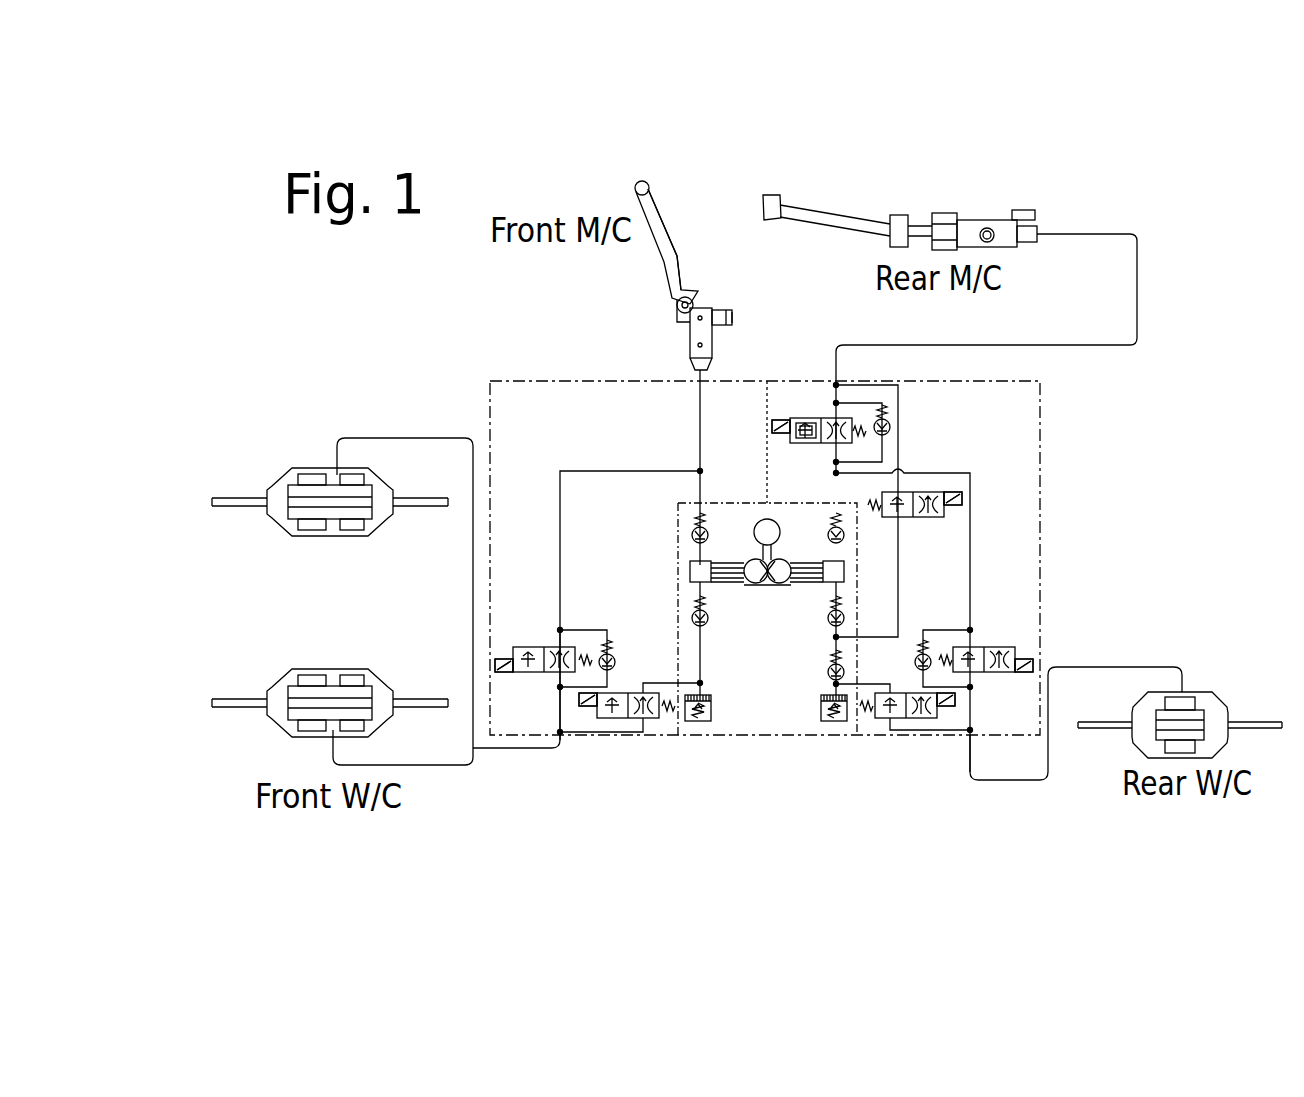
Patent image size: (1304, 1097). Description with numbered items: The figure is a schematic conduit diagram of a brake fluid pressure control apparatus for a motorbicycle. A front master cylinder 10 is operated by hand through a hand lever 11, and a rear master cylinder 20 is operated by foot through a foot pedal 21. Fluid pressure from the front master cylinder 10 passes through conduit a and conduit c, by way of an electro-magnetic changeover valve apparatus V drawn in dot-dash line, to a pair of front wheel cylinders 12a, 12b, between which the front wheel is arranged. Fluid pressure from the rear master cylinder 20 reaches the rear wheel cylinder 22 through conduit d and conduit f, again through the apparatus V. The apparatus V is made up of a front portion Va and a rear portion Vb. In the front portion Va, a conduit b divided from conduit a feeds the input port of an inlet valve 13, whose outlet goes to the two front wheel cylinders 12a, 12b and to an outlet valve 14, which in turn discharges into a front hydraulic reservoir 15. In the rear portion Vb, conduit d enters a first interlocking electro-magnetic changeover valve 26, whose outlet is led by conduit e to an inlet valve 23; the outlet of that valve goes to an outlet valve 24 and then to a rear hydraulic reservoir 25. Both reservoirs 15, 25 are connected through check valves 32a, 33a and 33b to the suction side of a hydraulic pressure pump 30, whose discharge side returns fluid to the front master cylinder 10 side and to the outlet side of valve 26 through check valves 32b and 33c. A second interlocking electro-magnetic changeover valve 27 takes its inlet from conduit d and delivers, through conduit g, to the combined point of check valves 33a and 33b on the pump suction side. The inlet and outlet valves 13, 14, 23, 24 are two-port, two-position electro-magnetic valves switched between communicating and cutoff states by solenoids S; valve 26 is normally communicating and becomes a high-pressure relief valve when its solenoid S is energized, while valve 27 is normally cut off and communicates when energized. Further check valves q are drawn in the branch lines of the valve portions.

The front master cylinder 10 is at (689, 263).
The hand lever 11 is at (657, 230).
The front wheel cylinder 12a is at (326, 468).
The front wheel cylinder 12b is at (325, 673).
The inlet valve 13 is at (732, 562).
The outlet valve 14 is at (624, 695).
The front hydraulic reservoir 15 is at (700, 722).
The rear master cylinder 20 is at (900, 221).
The foot pedal 21 is at (772, 224).
The rear wheel cylinder 22 is at (1193, 690).
The inlet valve 23 is at (993, 645).
The outlet valve 24 is at (900, 722).
The rear hydraulic reservoir 25 is at (832, 722).
The first interlocking electro-magnetic changeover valve 26 is at (803, 412).
The second interlocking electro-magnetic changeover valve 27 is at (920, 493).
The hydraulic pressure pump 30 is at (782, 596).
The check valve 32a is at (707, 618).
The check valve 32b is at (690, 537).
The check valve 33a is at (828, 668).
The check valve 33b is at (842, 613).
The check valve 33c is at (826, 532).
The conduit a is at (700, 416).
The conduit b is at (655, 471).
The conduit c is at (533, 752).
The conduit d is at (952, 345).
The conduit e is at (977, 580).
The conduit f is at (1010, 782).
The conduit g is at (898, 540).
The check valve q is at (608, 648).
The solenoid S is at (772, 427).
The electro-magnetic changeover valve apparatus V is at (1043, 580).
The front electro-magnetic changeover valve apparatus portion Va is at (588, 440).
The rear electro-magnetic changeover valve apparatus portion Vb is at (1019, 438).